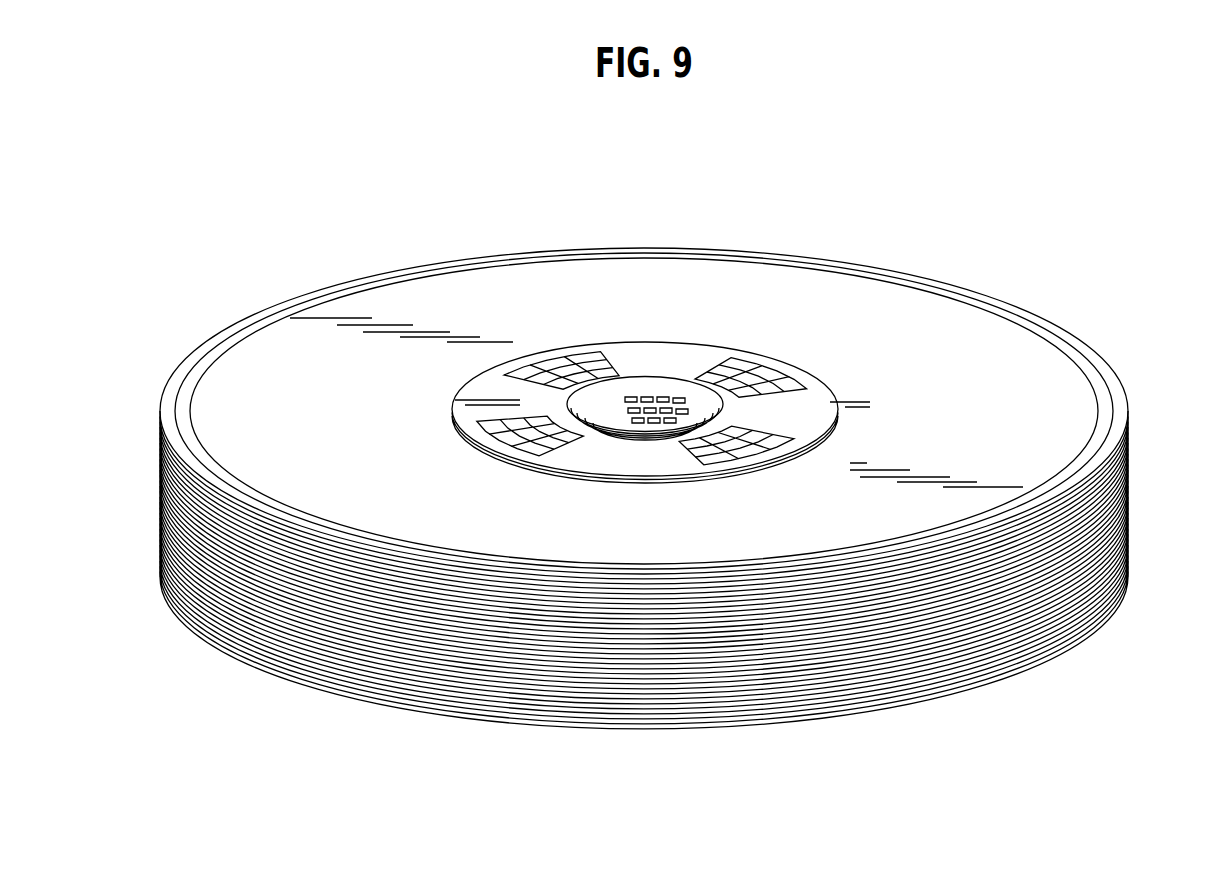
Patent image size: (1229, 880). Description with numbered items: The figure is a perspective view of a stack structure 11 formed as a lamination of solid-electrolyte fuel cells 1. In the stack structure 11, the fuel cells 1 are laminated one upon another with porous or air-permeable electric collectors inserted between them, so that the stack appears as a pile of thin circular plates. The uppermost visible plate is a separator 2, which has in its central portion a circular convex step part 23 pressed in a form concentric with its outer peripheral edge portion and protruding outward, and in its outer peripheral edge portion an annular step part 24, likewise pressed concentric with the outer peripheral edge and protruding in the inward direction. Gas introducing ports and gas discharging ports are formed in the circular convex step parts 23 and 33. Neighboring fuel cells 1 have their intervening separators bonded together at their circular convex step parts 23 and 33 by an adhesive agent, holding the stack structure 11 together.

The stack structure 11 is at (690, 432).
The solid-electrolyte fuel cell 1 is at (1128, 388).
The separator 2 is at (661, 389).
The annular step part 24 is at (1088, 348).
The circular convex step part 23 is at (596, 402).
The circular convex step part 33 is at (620, 398).